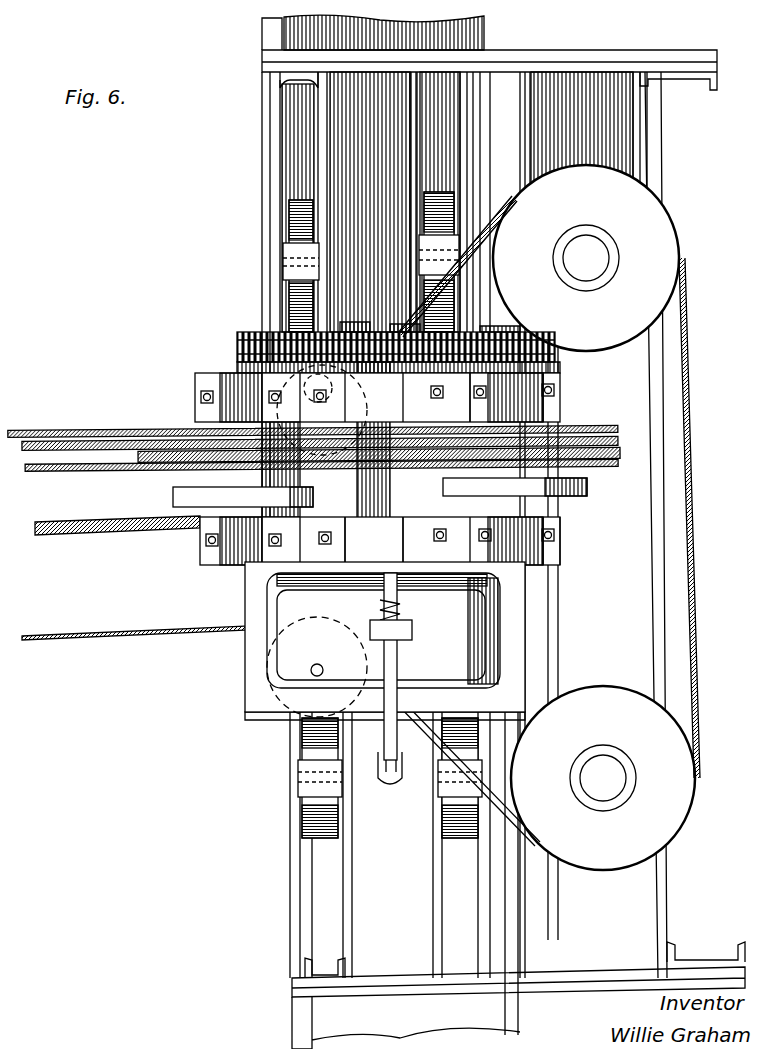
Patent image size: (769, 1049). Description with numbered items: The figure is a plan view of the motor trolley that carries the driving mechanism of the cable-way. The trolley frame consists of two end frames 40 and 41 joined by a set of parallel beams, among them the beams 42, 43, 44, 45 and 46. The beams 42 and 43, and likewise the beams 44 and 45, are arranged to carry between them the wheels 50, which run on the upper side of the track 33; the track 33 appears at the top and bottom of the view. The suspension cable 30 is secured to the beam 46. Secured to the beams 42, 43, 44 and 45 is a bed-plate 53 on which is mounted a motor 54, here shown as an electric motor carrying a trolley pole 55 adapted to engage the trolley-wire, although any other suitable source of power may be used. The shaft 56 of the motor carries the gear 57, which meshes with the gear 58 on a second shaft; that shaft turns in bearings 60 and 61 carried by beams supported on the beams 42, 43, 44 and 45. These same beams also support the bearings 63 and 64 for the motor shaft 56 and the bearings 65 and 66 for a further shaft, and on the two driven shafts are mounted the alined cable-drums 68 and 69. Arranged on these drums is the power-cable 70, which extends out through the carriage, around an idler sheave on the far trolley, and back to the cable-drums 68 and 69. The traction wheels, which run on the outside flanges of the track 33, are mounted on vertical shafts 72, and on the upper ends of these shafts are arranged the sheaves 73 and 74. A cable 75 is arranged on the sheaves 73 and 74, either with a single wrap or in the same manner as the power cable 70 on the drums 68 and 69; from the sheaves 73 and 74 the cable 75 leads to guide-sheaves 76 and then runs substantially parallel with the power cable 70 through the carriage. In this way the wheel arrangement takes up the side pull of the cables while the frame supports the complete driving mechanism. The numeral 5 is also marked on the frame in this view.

The frame 5 is at (450, 914).
The suspension cable 30 is at (70, 535).
The track 33 is at (262, 42).
The end frame 40 is at (716, 56).
The end frame 41 is at (540, 990).
The beam 42 is at (270, 138).
The beam 43 is at (327, 140).
The beam 44 is at (418, 185).
The beam 45 is at (475, 160).
The beam 46 is at (640, 148).
The wheels 50 is at (437, 232).
The bed-plate 53 is at (250, 670).
The motor 54 is at (268, 605).
The trolley pole 55 is at (388, 725).
The shaft 56 is at (400, 505).
The gear 57 is at (238, 342).
The gear 58 is at (553, 328).
The bearing 60 is at (557, 406).
The bearing 61 is at (548, 560).
The bearing 63 is at (375, 530).
The bearing 64 is at (322, 410).
The bearing 65 is at (200, 383).
The bearing 66 is at (205, 552).
The cable-drum 68 is at (590, 468).
The cable-drum 69 is at (140, 470).
The power-cable 70 is at (58, 432).
The vertical shafts 72 is at (582, 246).
The sheave 73 is at (655, 216).
The sheave 74 is at (684, 810).
The cable 75 is at (98, 444).
The guide-sheaves 76 is at (262, 368).